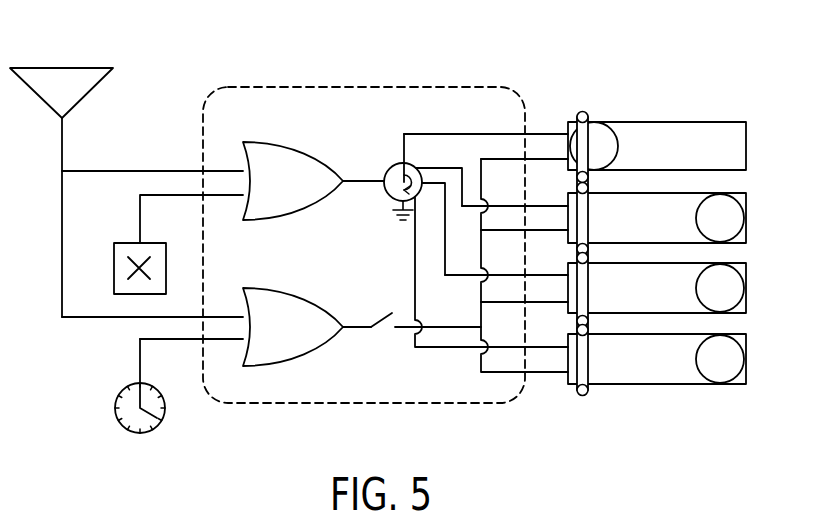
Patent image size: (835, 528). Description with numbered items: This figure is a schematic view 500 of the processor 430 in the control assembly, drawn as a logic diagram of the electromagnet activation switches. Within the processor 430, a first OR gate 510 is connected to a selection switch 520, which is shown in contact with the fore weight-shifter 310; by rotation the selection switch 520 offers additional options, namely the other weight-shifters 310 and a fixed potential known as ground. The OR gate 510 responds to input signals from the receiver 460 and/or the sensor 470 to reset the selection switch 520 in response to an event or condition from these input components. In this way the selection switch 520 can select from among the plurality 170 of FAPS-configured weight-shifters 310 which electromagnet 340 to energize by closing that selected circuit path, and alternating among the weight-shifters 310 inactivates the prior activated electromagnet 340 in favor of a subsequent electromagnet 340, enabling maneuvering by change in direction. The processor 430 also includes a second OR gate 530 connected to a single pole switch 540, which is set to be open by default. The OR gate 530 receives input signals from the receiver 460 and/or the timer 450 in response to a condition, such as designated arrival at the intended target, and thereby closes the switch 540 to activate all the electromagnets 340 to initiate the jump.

The schematic view 500 is at (617, 86).
The receiver 460 is at (84, 94).
The sensor 470 is at (127, 242).
The timer 450 is at (115, 407).
The processor 430 is at (468, 403).
The first OR gate 510 is at (300, 193).
The second OR gate 530 is at (300, 339).
The single pole switch 540 is at (377, 306).
The selection switch 520 is at (400, 164).
The weight-shifter 310 is at (745, 398).
The plurality of weight-shifters 170 is at (763, 114).
The electromagnet 340 is at (582, 110).